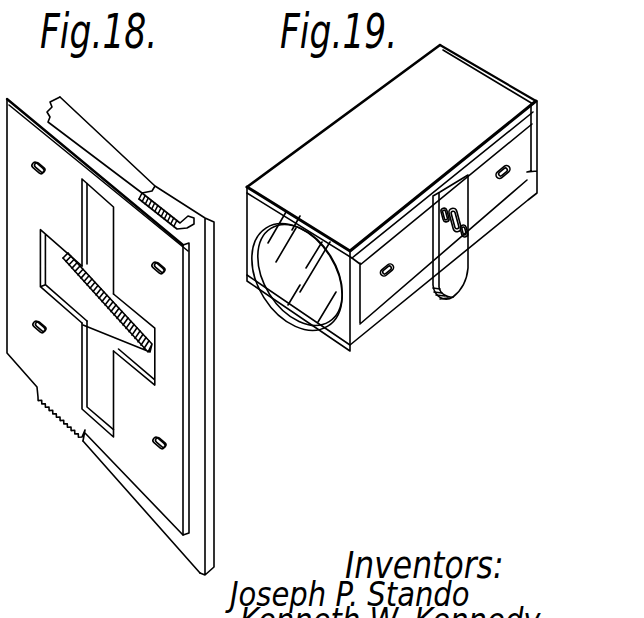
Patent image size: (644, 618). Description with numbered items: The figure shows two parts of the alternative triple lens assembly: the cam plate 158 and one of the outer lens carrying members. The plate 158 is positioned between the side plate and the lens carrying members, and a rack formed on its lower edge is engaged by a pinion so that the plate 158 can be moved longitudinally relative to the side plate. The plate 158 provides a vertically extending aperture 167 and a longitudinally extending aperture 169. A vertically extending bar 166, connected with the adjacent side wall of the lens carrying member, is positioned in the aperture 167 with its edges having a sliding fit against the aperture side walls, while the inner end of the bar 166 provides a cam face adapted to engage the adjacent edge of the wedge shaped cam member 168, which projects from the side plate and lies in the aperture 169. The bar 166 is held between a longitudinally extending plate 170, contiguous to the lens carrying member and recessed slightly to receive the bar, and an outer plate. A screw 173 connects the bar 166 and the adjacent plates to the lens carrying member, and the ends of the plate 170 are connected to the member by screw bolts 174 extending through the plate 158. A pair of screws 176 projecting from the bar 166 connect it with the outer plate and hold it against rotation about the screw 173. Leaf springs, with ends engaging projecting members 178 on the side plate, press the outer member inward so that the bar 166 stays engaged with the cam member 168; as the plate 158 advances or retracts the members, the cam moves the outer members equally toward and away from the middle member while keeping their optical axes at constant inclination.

In FIG. 18, the plate 158 is at (182, 434).
In FIG. 19, the bar 166 is at (463, 258).
In FIG. 18, the aperture 167 is at (98, 201).
In FIG. 18, the cam member 168 is at (107, 318).
In FIG. 18, the aperture 169 is at (53, 268).
In FIG. 19, the plate 170 is at (375, 300).
In FIG. 19, the screw 173 is at (461, 220).
In FIG. 19, the screw bolt 174 is at (393, 279).
In FIG. 19, the screw 176 is at (449, 206).
In FIG. 18, the projecting member 178 is at (173, 205).